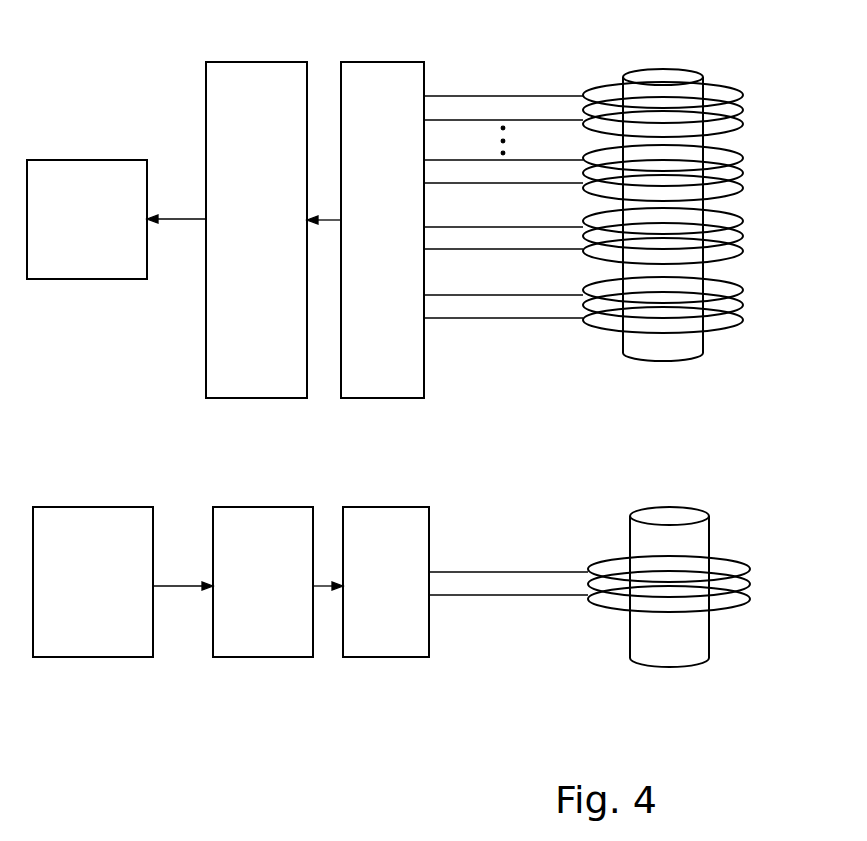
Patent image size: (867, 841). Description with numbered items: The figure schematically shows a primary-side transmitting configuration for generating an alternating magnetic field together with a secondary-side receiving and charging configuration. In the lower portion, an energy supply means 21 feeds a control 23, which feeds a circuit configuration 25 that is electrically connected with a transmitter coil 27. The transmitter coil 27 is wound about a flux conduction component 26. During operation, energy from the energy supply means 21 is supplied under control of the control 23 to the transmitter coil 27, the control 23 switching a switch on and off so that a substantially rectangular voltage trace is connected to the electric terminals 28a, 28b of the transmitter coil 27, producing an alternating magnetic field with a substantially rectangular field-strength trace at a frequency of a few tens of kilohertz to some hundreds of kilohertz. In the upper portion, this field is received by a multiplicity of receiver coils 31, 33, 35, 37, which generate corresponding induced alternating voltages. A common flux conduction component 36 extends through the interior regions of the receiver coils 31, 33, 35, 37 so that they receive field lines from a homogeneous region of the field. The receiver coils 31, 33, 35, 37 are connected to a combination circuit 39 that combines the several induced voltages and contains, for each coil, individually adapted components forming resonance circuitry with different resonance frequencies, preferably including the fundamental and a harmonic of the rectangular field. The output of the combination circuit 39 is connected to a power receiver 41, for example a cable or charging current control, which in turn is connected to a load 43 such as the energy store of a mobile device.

The energy supply means 21 is at (97, 657).
The control 23 is at (258, 657).
The circuit configuration 25 is at (387, 657).
The flux conduction component 26 is at (670, 517).
The transmitter coil 27 is at (750, 569).
The electric terminal 28a is at (480, 568).
The electric terminal 28b is at (477, 597).
The receiver coil 31 is at (743, 290).
The receiver coil 33 is at (743, 222).
The receiver coil 35 is at (742, 155).
The common flux conduction component 36 is at (668, 67).
The receiver coil 37 is at (742, 93).
The combination circuit 39 is at (375, 398).
The power receiver 41 is at (252, 398).
The load 43 is at (83, 279).